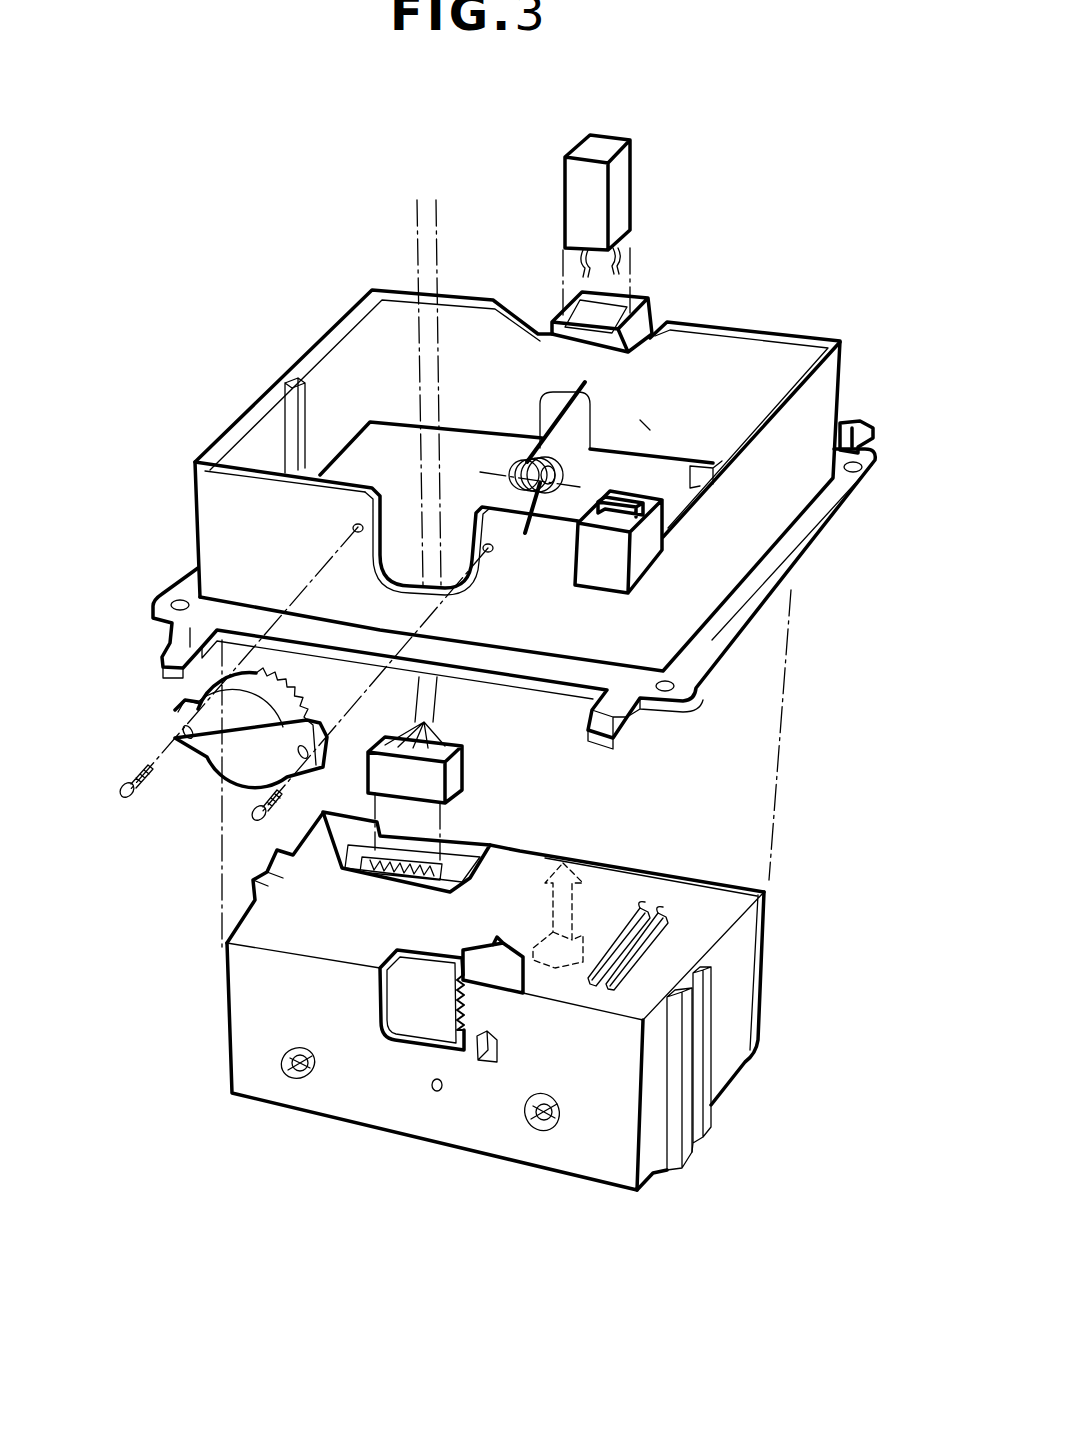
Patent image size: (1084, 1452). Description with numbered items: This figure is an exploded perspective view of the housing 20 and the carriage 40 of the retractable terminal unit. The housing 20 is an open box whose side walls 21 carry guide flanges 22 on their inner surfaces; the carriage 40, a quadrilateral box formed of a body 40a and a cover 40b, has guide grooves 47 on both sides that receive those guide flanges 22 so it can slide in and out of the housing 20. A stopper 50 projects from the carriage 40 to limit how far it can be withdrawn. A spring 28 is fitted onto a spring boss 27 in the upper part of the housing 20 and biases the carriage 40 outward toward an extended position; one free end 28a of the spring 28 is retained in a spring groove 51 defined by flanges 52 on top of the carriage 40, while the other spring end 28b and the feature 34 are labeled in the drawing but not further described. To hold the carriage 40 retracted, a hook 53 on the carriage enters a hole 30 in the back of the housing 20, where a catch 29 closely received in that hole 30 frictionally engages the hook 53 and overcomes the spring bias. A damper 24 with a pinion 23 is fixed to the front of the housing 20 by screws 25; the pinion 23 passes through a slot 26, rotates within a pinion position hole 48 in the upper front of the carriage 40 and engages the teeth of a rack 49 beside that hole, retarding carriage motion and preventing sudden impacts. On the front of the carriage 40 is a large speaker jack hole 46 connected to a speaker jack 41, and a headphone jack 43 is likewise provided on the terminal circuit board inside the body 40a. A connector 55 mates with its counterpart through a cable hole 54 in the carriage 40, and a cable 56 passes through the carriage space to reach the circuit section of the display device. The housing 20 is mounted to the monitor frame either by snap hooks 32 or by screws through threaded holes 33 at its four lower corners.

The housing 20 is at (200, 406).
The side walls 21 is at (352, 356).
The guide flanges 22 is at (312, 390).
The pinion 23 is at (305, 707).
The damper 24 is at (175, 720).
The screws 25 is at (126, 782).
The slot 26 is at (462, 566).
The spring boss 27 is at (618, 500).
The spring 28 is at (518, 476).
The free end of spring 28a is at (582, 425).
The spring arm 28b is at (528, 540).
The catch 29 is at (600, 152).
The hole 30 is at (620, 312).
The snap hooks 32 is at (862, 425).
The threaded holes 33 is at (870, 462).
The recess 34 is at (640, 420).
The carriage 40 is at (722, 1178).
The body 40a is at (238, 1015).
The cover 40b is at (775, 925).
The speaker jack 41 is at (295, 1060).
The headphone jack 43 is at (540, 1115).
The speaker jack hole 46 is at (310, 1075).
The guide grooves 47 is at (265, 862).
The pinion position hole 48 is at (400, 1005).
The rack 49 is at (455, 1000).
The stopper 50 is at (487, 1063).
The spring groove 51 is at (655, 930).
The flanges 52 is at (647, 910).
The hook 53 is at (570, 865).
The cable hole 54 is at (340, 868).
The connector 55 is at (415, 867).
The cable 56 is at (432, 320).